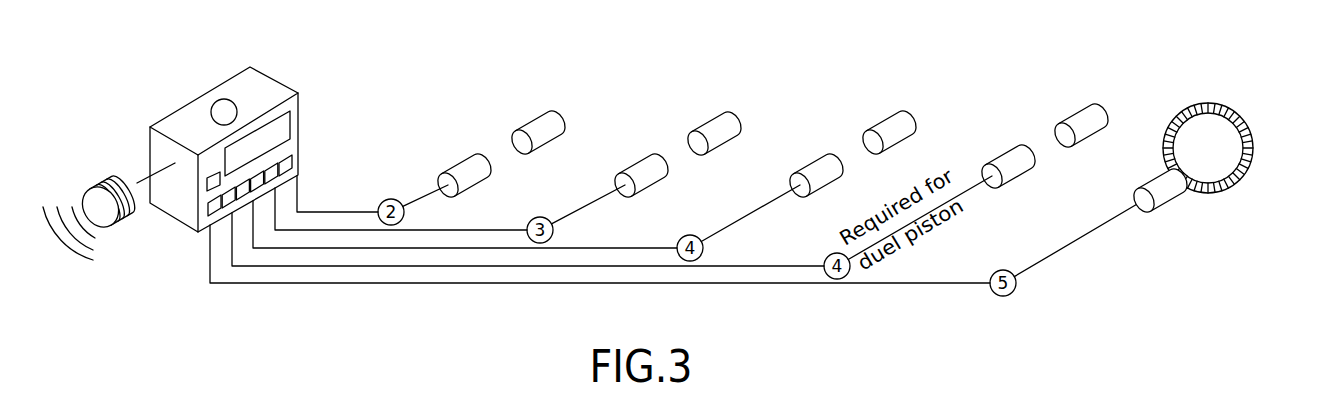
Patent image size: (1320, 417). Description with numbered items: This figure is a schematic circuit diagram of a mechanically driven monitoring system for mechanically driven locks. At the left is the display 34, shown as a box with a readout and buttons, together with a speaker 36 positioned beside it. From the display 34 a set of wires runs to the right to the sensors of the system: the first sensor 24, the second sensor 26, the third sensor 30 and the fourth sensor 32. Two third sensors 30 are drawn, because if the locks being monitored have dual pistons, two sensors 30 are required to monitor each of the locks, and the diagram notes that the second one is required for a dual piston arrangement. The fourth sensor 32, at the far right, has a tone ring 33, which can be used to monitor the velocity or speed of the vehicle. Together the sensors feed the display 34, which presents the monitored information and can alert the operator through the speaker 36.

The first sensor 24 is at (463, 141).
The second sensor 26 is at (641, 141).
The third sensor 30 is at (821, 141).
The fourth sensor 32 is at (1167, 193).
The tone ring 33 is at (1208, 104).
The display 34 is at (214, 102).
The speaker 36 is at (102, 185).